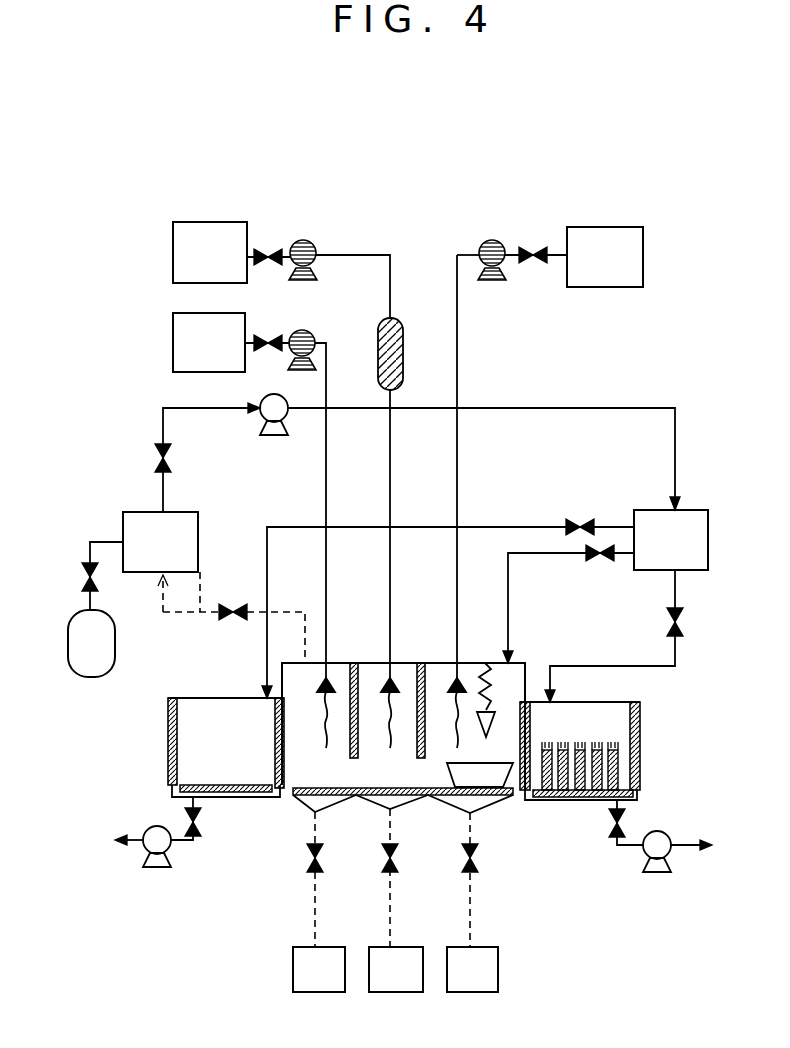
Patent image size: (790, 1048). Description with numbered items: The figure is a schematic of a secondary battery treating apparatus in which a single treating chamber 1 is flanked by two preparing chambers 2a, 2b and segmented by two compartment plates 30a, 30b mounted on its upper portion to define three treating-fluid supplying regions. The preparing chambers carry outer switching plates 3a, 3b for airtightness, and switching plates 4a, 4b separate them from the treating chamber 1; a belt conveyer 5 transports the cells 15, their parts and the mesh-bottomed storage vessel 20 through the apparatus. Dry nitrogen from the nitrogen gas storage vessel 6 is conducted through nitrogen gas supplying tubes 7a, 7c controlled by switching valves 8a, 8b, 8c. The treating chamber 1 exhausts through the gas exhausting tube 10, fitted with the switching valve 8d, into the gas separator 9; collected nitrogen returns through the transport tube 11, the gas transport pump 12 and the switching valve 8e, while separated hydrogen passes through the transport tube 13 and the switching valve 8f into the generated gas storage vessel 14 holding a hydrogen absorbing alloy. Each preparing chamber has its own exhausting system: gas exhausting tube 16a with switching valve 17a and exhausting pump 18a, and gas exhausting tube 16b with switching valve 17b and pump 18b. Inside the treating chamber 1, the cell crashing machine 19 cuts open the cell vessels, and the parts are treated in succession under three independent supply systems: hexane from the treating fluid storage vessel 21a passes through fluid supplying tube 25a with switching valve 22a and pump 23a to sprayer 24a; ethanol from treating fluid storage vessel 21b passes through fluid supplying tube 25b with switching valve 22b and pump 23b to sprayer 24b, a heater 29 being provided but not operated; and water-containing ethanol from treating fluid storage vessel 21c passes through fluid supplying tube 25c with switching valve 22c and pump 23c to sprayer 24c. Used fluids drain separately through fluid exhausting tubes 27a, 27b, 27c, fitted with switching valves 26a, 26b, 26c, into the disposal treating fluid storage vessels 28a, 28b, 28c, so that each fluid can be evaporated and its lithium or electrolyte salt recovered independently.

The treating chamber 1 is at (472, 662).
The preparing chamber 2a is at (620, 733).
The preparing chamber 2b is at (364, 777).
The switching plate 3a is at (641, 778).
The switching plate 3b is at (170, 752).
The switching plate 4a is at (532, 732).
The switching plate 4b is at (275, 740).
The belt conveyer 5 is at (295, 798).
The nitrogen gas storage vessel 6 is at (671, 540).
The nitrogen gas supplying tube 7a is at (610, 665).
The nitrogen gas supplying tube 7c is at (515, 527).
The switching valve 8a is at (685, 620).
The switching valve 8b is at (598, 560).
The switching valve 8c is at (586, 520).
The switching valve 8d is at (230, 618).
The switching valve 8e is at (157, 456).
The switching valve 8f is at (82, 575).
The gas separator 9 is at (160, 542).
The gas exhausting tube 10 is at (201, 584).
The transport tube 11 is at (200, 410).
The gas transport pump 12 is at (278, 436).
The transport tube 13 is at (103, 540).
The generated gas storage vessel 14 is at (91, 643).
The cells 15 is at (640, 742).
The gas exhausting tube 16a is at (618, 848).
The gas exhausting tube 16b is at (193, 847).
The switching valve 17a is at (630, 820).
The switching valve 17b is at (185, 819).
The exhausting pump 18a is at (660, 872).
The pump 18b is at (155, 868).
The cell crashing machine 19 is at (526, 677).
The storage vessel 20 is at (480, 775).
The treating fluid storage vessel 21a is at (605, 257).
The treating fluid storage vessel 21b is at (210, 252).
The treating fluid storage vessel 21c is at (209, 342).
The switching valve 22a is at (537, 247).
The switching valve 22b is at (268, 248).
The switching valve 22c is at (278, 336).
The pump 23a is at (495, 281).
The pump 23b is at (312, 243).
The pump 23c is at (298, 331).
The sprayer 24a is at (460, 713).
The sprayer 24b is at (388, 728).
The sprayer 24c is at (319, 728).
The fluid supplying tube 25a is at (459, 498).
The fluid supplying tube 25b is at (392, 498).
The fluid supplying tube 25c is at (328, 498).
The switching valve 26a is at (478, 858).
The switching valve 26b is at (397, 858).
The switching valve 26c is at (307, 868).
The fluid exhausting tube 27a is at (473, 910).
The fluid exhausting tube 27b is at (391, 878).
The fluid exhausting tube 27c is at (312, 912).
The disposal treating fluid storage vessel 28a is at (472, 969).
The disposal treating fluid storage vessel 28b is at (396, 969).
The disposal treating fluid storage vessel 28c is at (319, 969).
The heater 29 is at (395, 318).
The compartment plate 30a is at (420, 660).
The compartment plate 30b is at (352, 660).